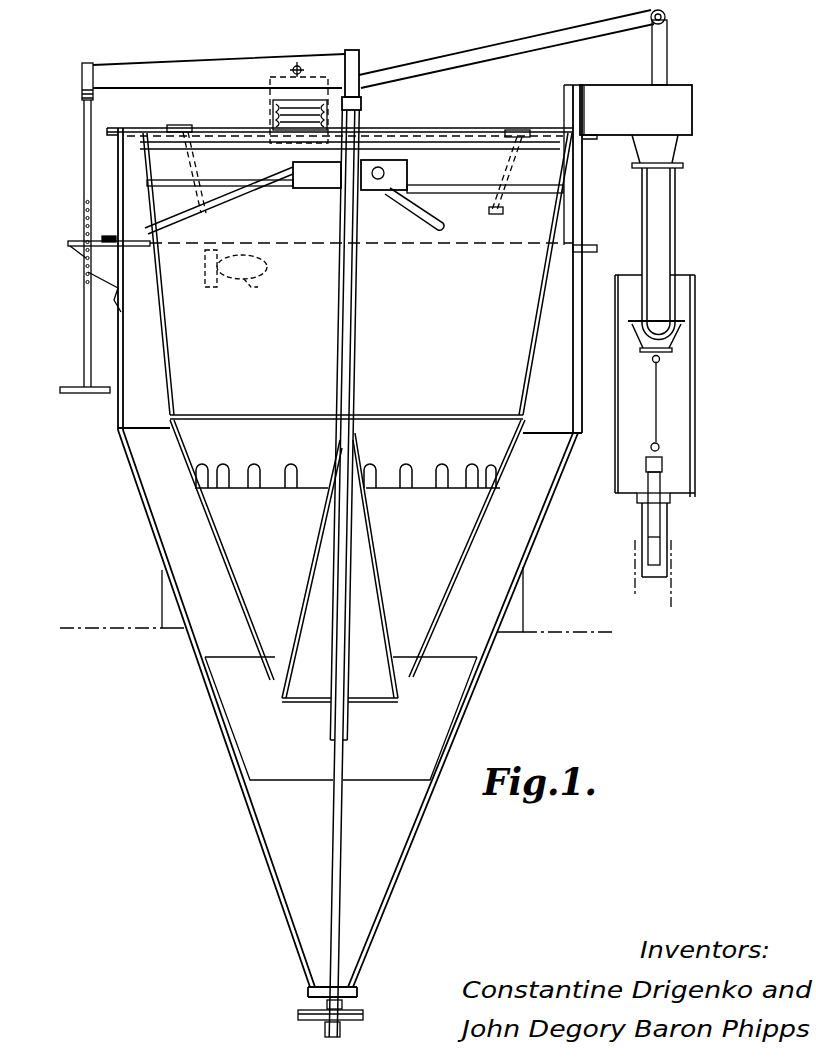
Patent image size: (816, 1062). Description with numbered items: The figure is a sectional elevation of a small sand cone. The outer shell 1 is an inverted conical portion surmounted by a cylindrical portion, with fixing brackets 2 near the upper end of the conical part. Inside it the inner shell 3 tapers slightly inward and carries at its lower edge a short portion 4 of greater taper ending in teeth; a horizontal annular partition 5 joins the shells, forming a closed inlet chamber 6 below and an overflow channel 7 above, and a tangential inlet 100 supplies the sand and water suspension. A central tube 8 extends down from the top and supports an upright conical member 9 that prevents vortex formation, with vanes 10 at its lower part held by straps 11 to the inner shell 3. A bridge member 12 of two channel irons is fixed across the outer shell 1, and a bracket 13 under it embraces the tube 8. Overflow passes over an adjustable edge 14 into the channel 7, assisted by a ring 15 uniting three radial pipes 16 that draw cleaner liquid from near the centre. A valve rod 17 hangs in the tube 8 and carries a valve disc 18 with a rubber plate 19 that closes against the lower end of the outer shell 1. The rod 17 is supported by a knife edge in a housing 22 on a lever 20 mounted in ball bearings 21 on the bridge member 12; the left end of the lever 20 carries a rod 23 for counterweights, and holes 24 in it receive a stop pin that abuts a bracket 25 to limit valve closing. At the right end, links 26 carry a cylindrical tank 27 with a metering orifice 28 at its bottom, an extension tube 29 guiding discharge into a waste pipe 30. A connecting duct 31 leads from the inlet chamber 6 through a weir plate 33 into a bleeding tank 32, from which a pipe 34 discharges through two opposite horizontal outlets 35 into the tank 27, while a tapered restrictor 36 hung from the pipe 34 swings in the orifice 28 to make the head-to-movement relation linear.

The outer shell 1 is at (578, 348).
The fixing brackets 2 is at (167, 602).
The inner shell 3 is at (542, 317).
The short portion 4 is at (301, 450).
The horizontal annular partition 5 is at (141, 248).
The inlet chamber 6 is at (152, 380).
The overflow channel 7 is at (128, 200).
The central tube 8 is at (359, 298).
The upright conical member 9 is at (374, 576).
The vanes 10 is at (472, 650).
The straps 11 is at (219, 546).
The bridge member 12 is at (273, 118).
The bracket 13 is at (280, 144).
The overflow edge 14 is at (149, 145).
The ring 15 is at (408, 173).
The radial pipes 16 is at (252, 192).
The valve rod 17 is at (357, 121).
The valve disc 18 is at (357, 1020).
The rubber plate 19 is at (357, 1007).
The lever 20 is at (497, 37).
The ball bearings 21 is at (340, 70).
The housing 22 is at (361, 56).
The rod 23 is at (92, 126).
The holes 24 is at (91, 232).
The bracket 25 is at (113, 312).
The links 26 is at (661, 54).
The cylindrical tank 27 is at (695, 412).
The metering orifice 28 is at (628, 495).
The extension tube 29 is at (643, 527).
The waste pipe 30 is at (637, 589).
The connecting duct 31 is at (566, 213).
The bleeding tank 32 is at (670, 97).
The weir plate 33 is at (578, 100).
The pipe 34 is at (676, 232).
The horizontal outlets 35 is at (632, 327).
The restrictor 36 is at (648, 475).
The tangential inlet 100 is at (237, 282).